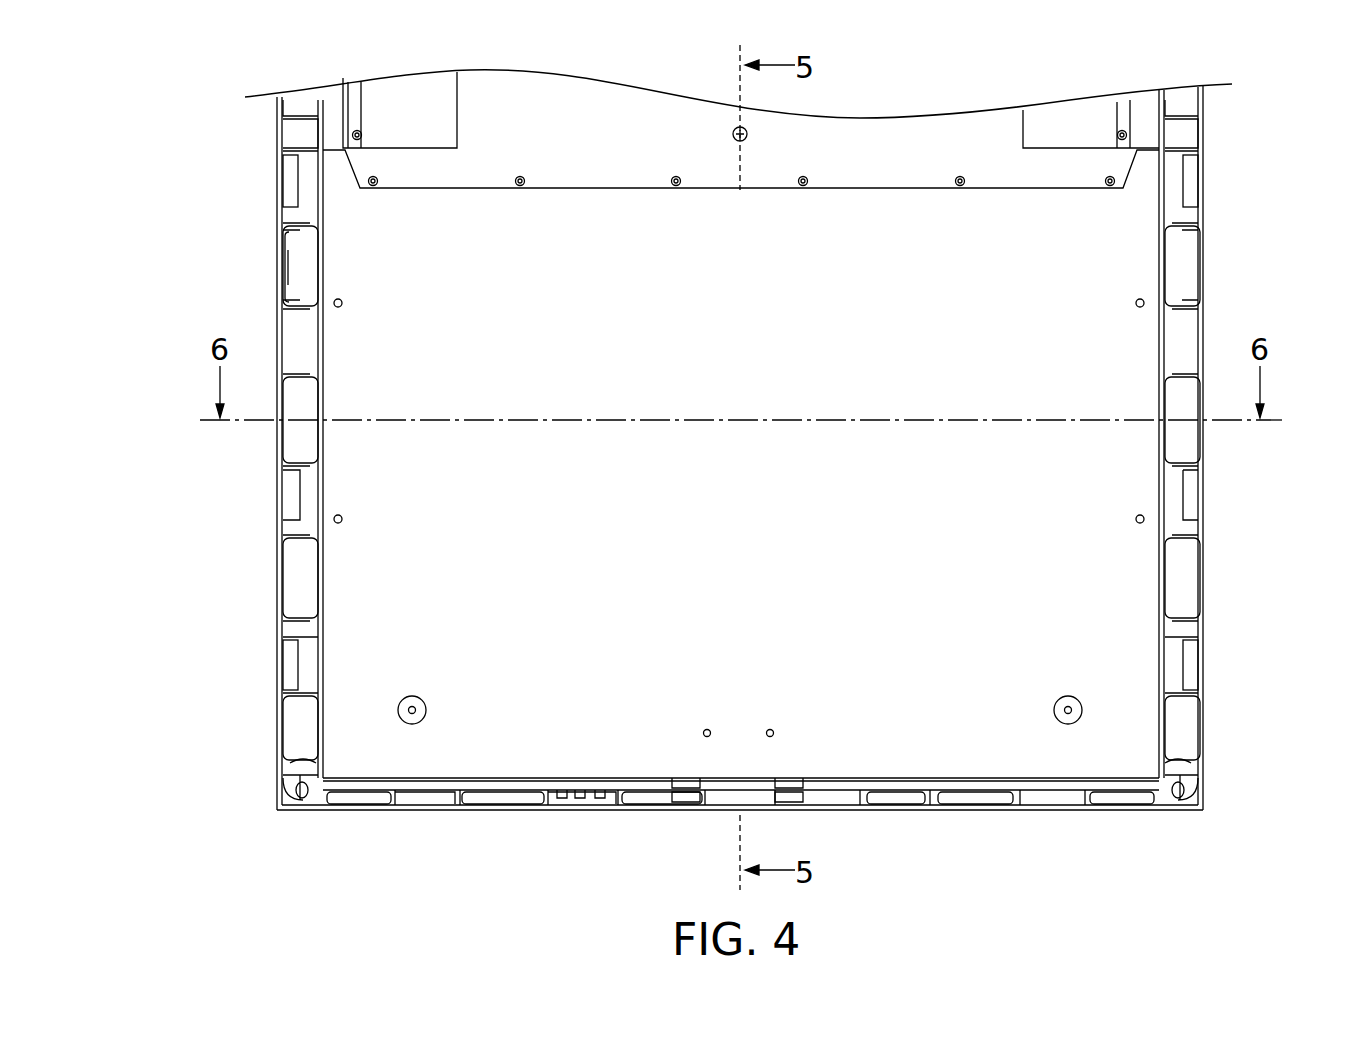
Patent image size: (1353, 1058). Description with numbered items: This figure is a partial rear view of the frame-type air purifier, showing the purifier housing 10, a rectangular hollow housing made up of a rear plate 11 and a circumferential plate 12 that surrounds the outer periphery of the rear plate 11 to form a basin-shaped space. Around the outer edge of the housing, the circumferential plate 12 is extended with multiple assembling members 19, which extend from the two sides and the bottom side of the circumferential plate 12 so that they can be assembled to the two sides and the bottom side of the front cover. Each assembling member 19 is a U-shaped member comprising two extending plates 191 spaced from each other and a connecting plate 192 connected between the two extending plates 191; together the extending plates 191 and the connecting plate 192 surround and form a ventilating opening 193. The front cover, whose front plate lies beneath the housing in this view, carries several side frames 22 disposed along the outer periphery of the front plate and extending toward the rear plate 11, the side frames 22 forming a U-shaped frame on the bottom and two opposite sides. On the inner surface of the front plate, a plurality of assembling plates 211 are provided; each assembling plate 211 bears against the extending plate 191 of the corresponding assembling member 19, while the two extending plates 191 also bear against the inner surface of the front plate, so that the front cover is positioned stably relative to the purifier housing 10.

The purifier housing 10 is at (1072, 130).
The rear plate 11 is at (1100, 485).
The circumferential plate 12 is at (320, 492).
The assembling member 19 is at (160, 196).
The extending plate 191 is at (283, 213).
The connecting plate 192 is at (283, 270).
The ventilating opening 193 is at (283, 244).
The assembling plate 211 is at (280, 477).
The side frame 22 is at (278, 702).